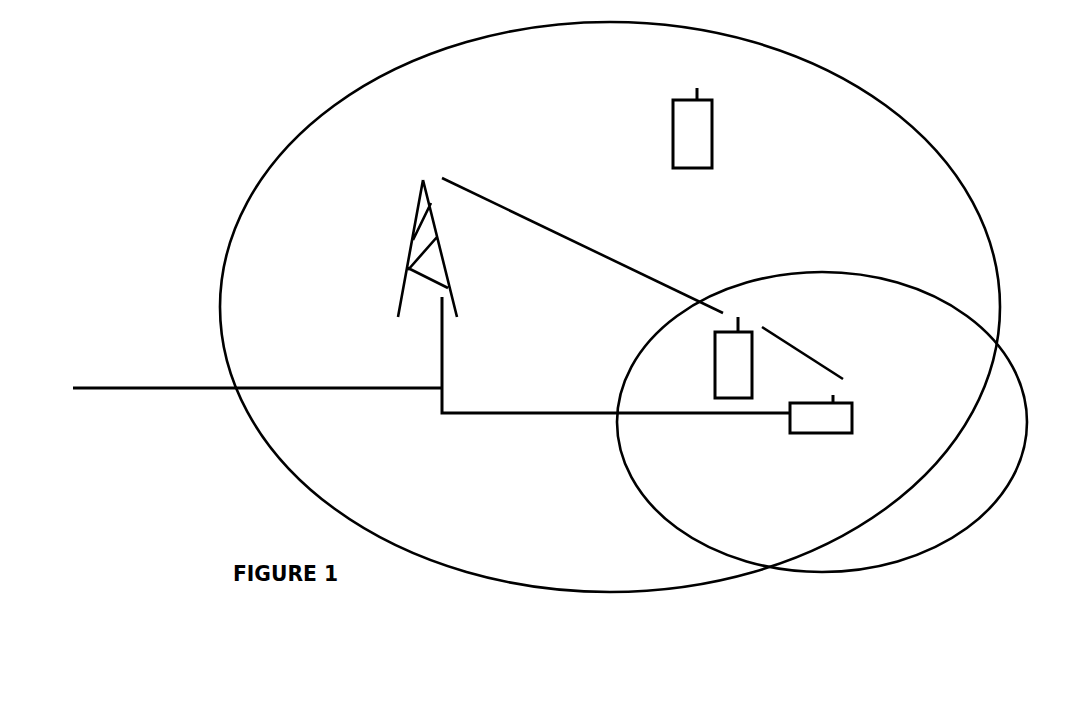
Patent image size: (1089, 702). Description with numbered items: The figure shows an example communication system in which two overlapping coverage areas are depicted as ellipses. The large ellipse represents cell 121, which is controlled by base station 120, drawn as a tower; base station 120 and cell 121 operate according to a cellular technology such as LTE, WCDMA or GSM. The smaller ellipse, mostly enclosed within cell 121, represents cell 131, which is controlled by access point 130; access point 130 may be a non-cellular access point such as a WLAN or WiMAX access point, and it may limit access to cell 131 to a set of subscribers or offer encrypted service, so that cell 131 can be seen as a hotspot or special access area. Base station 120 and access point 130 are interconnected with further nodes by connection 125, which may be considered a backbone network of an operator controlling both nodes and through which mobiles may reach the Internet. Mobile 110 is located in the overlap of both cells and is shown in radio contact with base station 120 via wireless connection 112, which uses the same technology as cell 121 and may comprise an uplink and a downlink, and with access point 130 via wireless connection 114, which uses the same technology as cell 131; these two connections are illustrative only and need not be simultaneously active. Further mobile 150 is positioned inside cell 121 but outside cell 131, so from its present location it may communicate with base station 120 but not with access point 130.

The mobile 110 is at (712, 357).
The wireless connection 112 is at (525, 213).
The wireless connection 114 is at (786, 333).
The base station 120 is at (421, 261).
The cell 121 is at (610, 307).
The connection 125 is at (431, 371).
The access point 130 is at (821, 428).
The cell 131 is at (841, 422).
The further mobile 150 is at (671, 128).